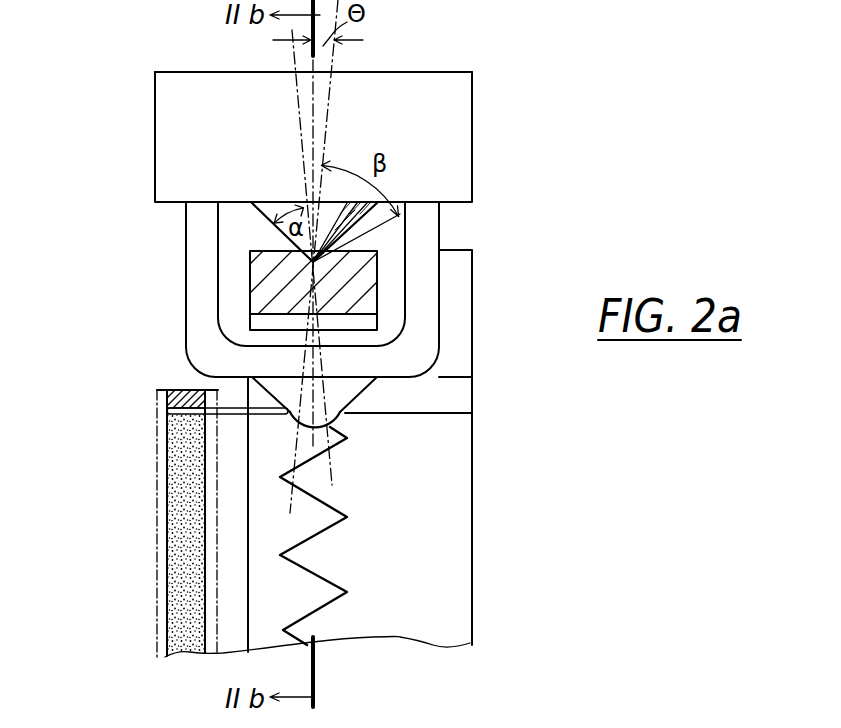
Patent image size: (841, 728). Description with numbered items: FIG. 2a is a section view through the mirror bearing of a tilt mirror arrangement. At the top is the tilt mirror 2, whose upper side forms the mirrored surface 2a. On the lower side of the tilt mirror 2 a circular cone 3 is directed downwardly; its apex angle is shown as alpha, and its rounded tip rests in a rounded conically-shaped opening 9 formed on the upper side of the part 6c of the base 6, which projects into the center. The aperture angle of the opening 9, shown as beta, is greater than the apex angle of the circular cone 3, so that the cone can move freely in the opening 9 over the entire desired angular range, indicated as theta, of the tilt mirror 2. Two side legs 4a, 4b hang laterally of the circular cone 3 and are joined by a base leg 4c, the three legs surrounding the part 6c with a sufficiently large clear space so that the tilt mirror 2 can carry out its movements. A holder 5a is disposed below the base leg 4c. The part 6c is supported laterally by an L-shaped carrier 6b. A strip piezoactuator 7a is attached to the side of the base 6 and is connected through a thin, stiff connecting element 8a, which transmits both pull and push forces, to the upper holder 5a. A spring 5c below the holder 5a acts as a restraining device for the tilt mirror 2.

The tilt mirror 2 is at (455, 157).
The mirrored surface 2a is at (406, 68).
The circular cone 3 is at (272, 202).
The conically-shaped opening 9 is at (293, 256).
The side leg 4a is at (425, 228).
The side leg 4b is at (197, 242).
The base leg 4c is at (390, 360).
The holder 5a is at (342, 400).
The spring 5c is at (325, 608).
The part of the base 6c is at (258, 288).
The L-shaped carrier 6b is at (452, 566).
The connecting element 8a is at (233, 413).
The strip piezoactuator 7a is at (178, 516).
The base 6 is at (116, 582).